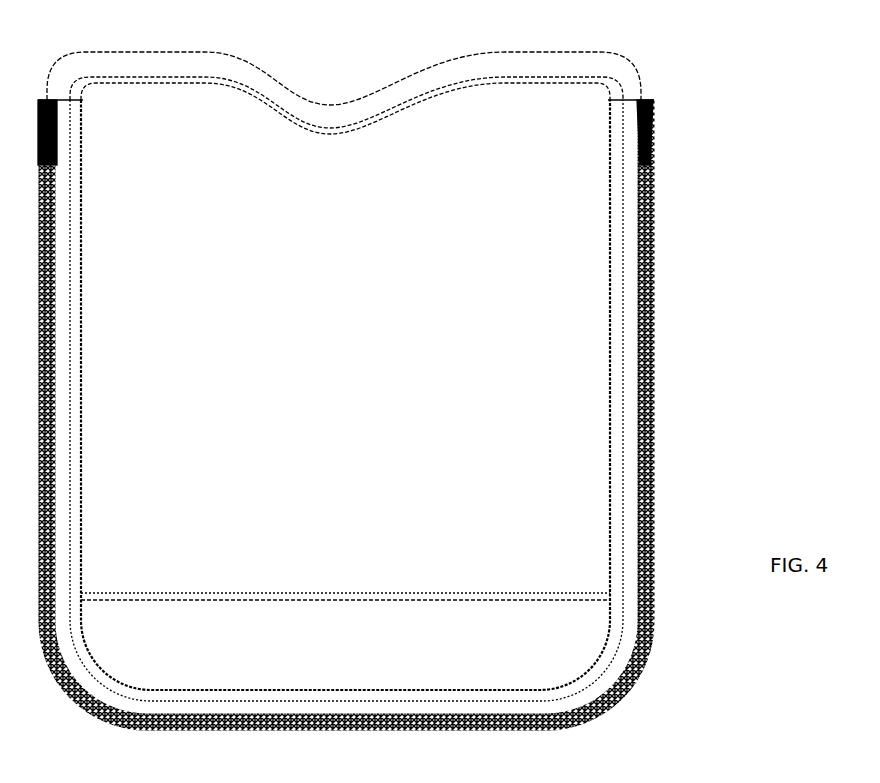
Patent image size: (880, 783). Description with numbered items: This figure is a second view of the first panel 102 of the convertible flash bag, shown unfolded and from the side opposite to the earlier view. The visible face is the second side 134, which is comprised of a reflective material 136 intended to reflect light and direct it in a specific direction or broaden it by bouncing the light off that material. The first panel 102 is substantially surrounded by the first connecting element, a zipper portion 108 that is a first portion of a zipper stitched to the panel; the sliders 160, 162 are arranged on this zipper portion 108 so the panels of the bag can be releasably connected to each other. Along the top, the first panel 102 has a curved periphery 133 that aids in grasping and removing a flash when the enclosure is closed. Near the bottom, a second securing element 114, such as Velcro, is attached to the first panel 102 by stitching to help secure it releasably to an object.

The first panel 102 is at (745, 140).
The zipper portion 108 is at (650, 274).
The second securing element 114 is at (357, 627).
The curved periphery 133 is at (447, 88).
The second side 134 is at (227, 140).
The reflective material 136 is at (540, 383).
The slider 160 is at (57, 133).
The slider 162 is at (651, 127).